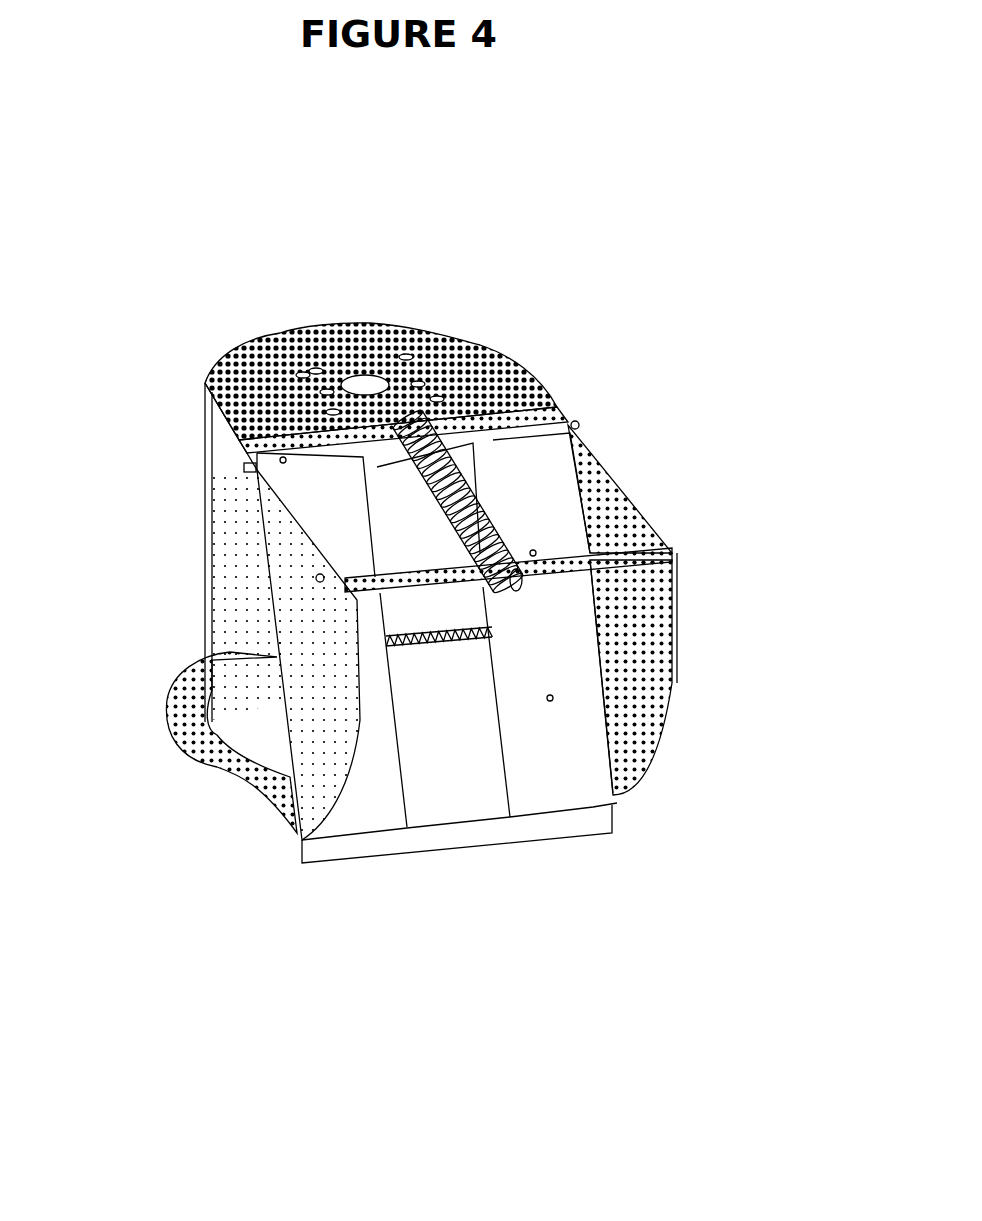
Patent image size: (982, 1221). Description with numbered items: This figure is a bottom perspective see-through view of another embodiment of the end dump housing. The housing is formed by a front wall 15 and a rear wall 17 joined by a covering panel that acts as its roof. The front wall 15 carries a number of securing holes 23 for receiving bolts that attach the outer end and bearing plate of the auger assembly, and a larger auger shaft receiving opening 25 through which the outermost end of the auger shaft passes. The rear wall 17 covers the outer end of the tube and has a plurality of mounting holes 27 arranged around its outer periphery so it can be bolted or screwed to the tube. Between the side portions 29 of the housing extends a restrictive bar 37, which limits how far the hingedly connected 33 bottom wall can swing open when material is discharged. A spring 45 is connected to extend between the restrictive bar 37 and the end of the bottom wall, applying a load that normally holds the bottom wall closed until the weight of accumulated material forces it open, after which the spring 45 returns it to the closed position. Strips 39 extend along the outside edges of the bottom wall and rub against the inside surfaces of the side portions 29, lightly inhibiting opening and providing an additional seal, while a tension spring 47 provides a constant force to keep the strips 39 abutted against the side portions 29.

The front wall 15 is at (480, 366).
The rear wall 17 is at (204, 733).
The securing holes 23 is at (300, 372).
The auger shaft receiving opening 25 is at (372, 383).
The mounting holes 27 is at (180, 706).
The side portions 29 is at (658, 665).
The hinged connection 33 is at (585, 422).
The restrictive bar 37 is at (620, 555).
The strips 39 is at (355, 790).
The spring 45 is at (465, 480).
The tension spring 47 is at (447, 640).